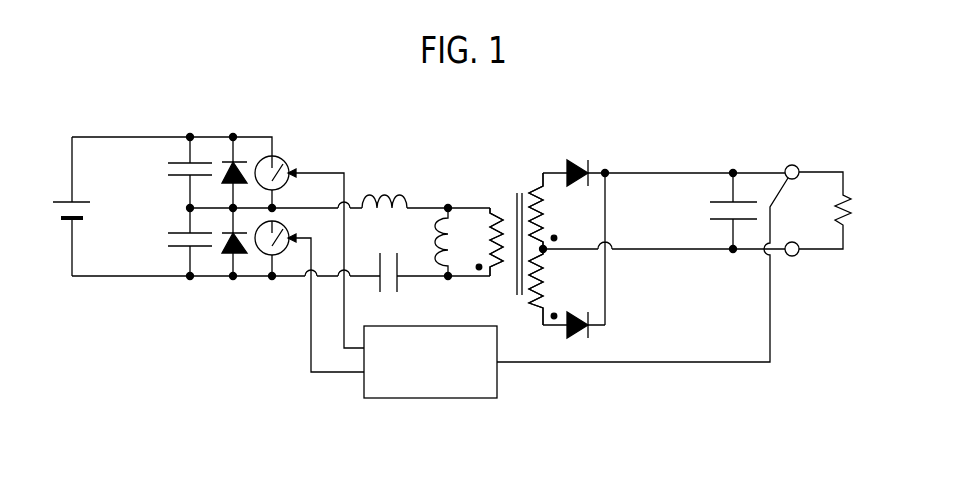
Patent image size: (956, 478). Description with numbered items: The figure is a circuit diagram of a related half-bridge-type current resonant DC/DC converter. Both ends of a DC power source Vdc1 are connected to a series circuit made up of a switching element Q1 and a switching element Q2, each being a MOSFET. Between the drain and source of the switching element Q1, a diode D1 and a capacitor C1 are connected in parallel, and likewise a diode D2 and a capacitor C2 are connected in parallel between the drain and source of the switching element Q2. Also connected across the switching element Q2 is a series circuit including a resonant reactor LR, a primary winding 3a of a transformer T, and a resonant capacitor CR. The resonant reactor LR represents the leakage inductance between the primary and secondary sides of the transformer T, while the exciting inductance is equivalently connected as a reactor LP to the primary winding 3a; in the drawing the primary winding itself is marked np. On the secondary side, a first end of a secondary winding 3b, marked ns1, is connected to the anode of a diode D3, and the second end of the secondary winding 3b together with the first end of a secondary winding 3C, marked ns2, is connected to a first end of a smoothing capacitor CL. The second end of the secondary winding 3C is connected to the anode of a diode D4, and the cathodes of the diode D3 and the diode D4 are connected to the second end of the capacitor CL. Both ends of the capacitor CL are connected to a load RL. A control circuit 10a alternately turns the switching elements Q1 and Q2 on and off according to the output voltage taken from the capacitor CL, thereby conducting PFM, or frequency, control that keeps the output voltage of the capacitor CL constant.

The DC power source Vdc1 is at (88, 197).
The capacitor C1 is at (173, 172).
The capacitor C2 is at (173, 242).
The diode D1 is at (222, 172).
The diode D2 is at (222, 242).
The switching element Q1 is at (309, 246).
The switching element Q2 is at (309, 296).
The resonant reactor LR is at (384, 186).
The resonant capacitor CR is at (374, 285).
The reactor LP is at (422, 242).
The primary winding np is at (483, 242).
The primary winding 3a is at (475, 220).
The transformer T is at (512, 226).
The secondary winding 3b is at (553, 193).
The first secondary winding ns1 is at (556, 211).
The secondary winding 3C is at (548, 300).
The second secondary winding ns2 is at (558, 287).
The diode D3 is at (587, 160).
The diode D4 is at (593, 337).
The smoothing capacitor CL is at (720, 211).
The load RL is at (825, 210).
The control circuit 10a is at (408, 325).